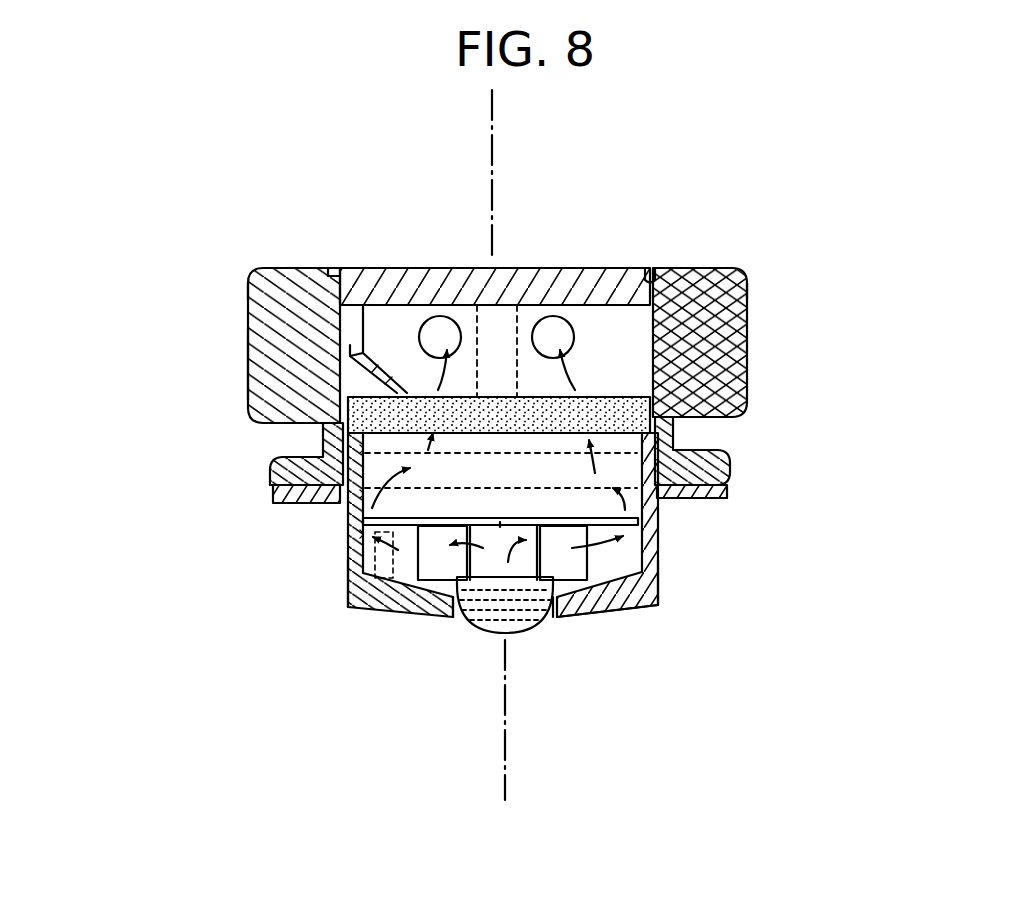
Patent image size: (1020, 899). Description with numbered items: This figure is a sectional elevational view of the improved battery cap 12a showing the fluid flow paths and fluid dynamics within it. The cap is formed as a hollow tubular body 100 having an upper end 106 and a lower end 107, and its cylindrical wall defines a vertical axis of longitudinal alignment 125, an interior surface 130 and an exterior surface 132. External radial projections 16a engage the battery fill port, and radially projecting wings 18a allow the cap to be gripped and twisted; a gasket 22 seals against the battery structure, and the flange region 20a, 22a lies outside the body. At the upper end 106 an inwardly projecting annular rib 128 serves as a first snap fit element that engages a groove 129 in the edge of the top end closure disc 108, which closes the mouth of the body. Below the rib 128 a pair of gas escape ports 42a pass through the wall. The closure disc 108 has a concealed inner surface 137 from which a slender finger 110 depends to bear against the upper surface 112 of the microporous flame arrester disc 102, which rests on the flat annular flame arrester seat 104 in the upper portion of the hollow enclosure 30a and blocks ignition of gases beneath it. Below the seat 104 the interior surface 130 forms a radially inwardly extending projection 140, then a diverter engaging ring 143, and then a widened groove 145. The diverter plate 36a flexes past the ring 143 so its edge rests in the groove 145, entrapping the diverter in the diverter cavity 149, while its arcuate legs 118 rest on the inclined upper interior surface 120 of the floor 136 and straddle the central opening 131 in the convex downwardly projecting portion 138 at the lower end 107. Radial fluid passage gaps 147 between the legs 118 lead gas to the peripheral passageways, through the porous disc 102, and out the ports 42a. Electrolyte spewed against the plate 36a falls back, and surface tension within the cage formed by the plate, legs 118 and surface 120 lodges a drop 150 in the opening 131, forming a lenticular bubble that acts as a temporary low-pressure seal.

The battery cap 12a is at (175, 246).
The upper end 106 is at (294, 268).
The groove 129 is at (318, 266).
The axis of longitudinal alignment 125 is at (490, 178).
The top end closure disc 108 is at (553, 318).
The gas escape ports 42a is at (440, 320).
The concealed inner surface 137 is at (563, 300).
The hollow enclosure 30a is at (593, 317).
The annular rib 128 is at (655, 263).
The upper surface 112 is at (745, 262).
The flame arrester disc 102 is at (750, 290).
The flame arrester seat 104 is at (750, 328).
The finger 110 is at (248, 289).
The interior surface 130 is at (345, 370).
The wings 18a is at (248, 368).
The exterior surface 132 is at (745, 412).
The flange 20a is at (725, 452).
The lower flange 22a is at (730, 487).
The gasket 22 is at (720, 502).
The radially inwardly extending projection 140 is at (320, 446).
The diverter engaging ring 143 is at (273, 486).
The groove 145 is at (362, 523).
The radial fluid passage gaps 147 is at (505, 524).
The diverter cavity 149 is at (636, 548).
The external radial projections 16a is at (365, 575).
The upper interior surface of the floor 120 is at (360, 557).
The legs 118 is at (427, 600).
The plate 36a is at (497, 633).
The central opening 131 is at (547, 613).
The convex downwardly projecting portion 138 is at (557, 607).
The drop of electrolyte 150 is at (500, 522).
The lower end 107 is at (660, 578).
The floor 136 is at (660, 605).
The tubular body 100 is at (730, 563).